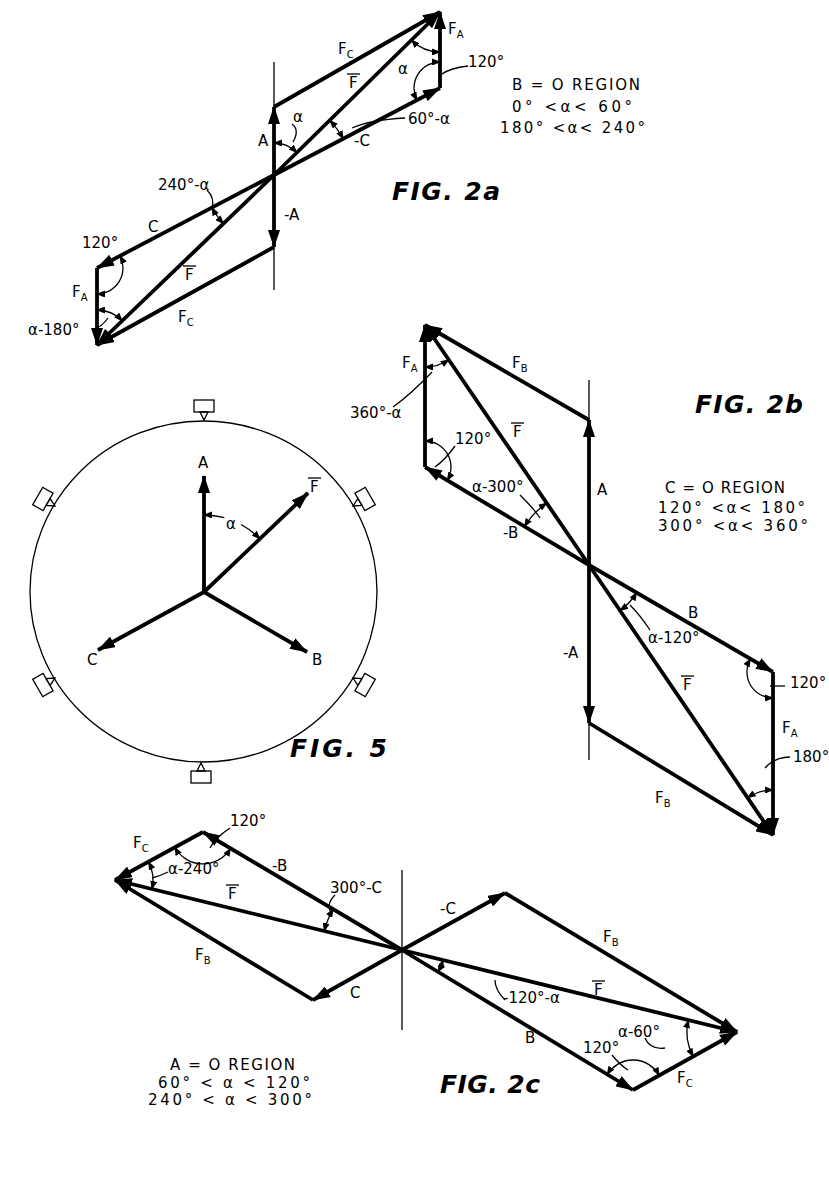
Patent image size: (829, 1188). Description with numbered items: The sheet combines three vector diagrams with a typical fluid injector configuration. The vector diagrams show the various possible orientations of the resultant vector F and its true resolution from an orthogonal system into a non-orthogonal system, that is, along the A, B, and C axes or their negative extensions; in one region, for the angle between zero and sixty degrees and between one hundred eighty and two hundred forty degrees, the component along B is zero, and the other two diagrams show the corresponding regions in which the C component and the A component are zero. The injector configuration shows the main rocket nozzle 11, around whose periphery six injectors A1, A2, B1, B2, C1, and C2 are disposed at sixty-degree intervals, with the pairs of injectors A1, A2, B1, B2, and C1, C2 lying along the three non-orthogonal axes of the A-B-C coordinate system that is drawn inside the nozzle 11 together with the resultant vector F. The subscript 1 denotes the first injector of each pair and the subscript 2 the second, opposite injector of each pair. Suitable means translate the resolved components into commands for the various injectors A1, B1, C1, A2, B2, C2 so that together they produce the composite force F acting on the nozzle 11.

The main rocket nozzle 11 is at (377, 600).
The first set of sensing elements A1, B1, C1 1 is at (204, 444).
The second set of sensing elements A2, B2, C2 2 is at (204, 738).
The injector A1 is at (204, 397).
The injector B1 is at (46, 489).
The injector C1 is at (361, 493).
The injector A2 is at (201, 785).
The injector B2 is at (368, 693).
The injector C2 is at (40, 691).